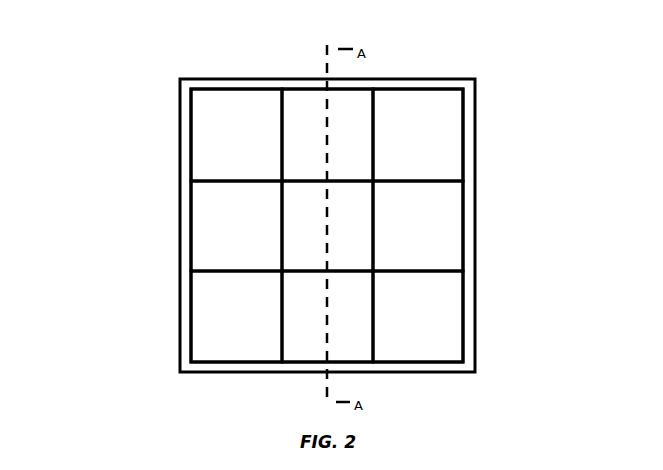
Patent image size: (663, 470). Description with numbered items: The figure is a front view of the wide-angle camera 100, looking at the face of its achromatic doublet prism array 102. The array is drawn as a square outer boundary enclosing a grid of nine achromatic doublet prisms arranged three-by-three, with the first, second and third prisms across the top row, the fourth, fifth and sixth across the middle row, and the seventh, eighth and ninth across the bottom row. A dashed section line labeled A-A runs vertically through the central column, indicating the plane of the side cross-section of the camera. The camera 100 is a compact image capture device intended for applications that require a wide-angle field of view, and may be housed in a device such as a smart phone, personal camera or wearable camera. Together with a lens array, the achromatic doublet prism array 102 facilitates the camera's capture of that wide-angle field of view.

The wide-angle camera 100 is at (120, 47).
The achromatic doublet prism array 102 is at (487, 78).